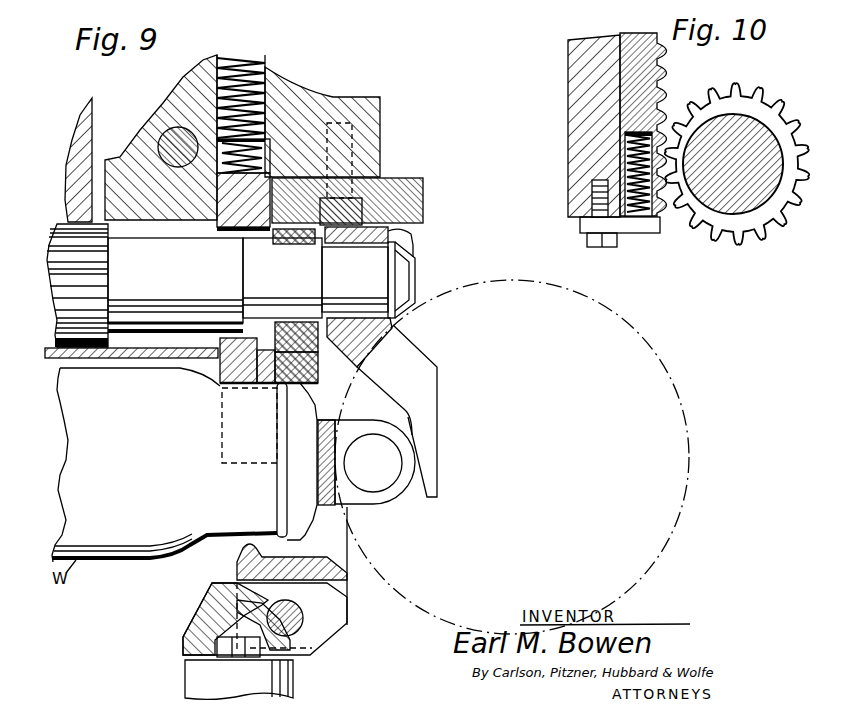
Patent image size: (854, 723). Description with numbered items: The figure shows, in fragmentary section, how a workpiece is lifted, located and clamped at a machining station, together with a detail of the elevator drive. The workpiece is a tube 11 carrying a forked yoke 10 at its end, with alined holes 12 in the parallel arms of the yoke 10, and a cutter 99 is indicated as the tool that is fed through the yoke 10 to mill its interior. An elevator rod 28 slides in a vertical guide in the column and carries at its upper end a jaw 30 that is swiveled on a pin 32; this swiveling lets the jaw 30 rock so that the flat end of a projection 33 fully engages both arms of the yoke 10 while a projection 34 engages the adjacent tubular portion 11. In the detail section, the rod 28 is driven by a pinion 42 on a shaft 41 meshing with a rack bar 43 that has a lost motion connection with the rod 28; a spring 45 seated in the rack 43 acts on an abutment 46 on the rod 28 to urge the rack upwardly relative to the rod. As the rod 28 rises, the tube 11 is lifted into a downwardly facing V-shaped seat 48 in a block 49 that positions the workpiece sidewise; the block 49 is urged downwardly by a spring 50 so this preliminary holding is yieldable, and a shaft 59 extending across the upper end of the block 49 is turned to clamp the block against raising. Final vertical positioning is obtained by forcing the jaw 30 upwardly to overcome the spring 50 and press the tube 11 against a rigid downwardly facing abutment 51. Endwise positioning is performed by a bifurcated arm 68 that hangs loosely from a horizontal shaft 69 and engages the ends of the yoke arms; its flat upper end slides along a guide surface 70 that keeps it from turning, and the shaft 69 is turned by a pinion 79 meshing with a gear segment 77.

In FIG. 9, the gear segment 77 is at (80, 137).
In FIG. 9, the shaft 59 is at (168, 133).
In FIG. 9, the spring 50 is at (255, 70).
In FIG. 9, the horizontal shaft 69 is at (190, 252).
In FIG. 9, the guide surface 70 is at (417, 236).
In FIG. 9, the pinion 79 is at (102, 282).
In FIG. 9, the block 49 is at (225, 369).
In FIG. 9, the V-shaped seat 48 is at (225, 386).
In FIG. 9, the abutment 51 is at (268, 380).
In FIG. 9, the tube 11 is at (112, 553).
In FIG. 9, the projection 33 is at (348, 536).
In FIG. 9, the yoke 10 is at (357, 428).
In FIG. 9, the hole 12 is at (392, 481).
In FIG. 9, the bifurcated arm 68 is at (434, 386).
In FIG. 9, the cutter 99 is at (662, 372).
In FIG. 9, the projection 34 is at (241, 547).
In FIG. 9, the jaw 30 is at (365, 613).
In FIG. 9, the pin 32 is at (302, 614).
In FIG. 9, the elevator rod 28 is at (193, 683).
In FIG. 10, the elevator rod 28 is at (578, 122).
In FIG. 10, the rack bar 43 is at (663, 69).
In FIG. 10, the spring 45 is at (650, 213).
In FIG. 10, the abutment 46 is at (642, 232).
In FIG. 10, the pinion 42 is at (745, 92).
In FIG. 10, the shaft 41 is at (755, 118).